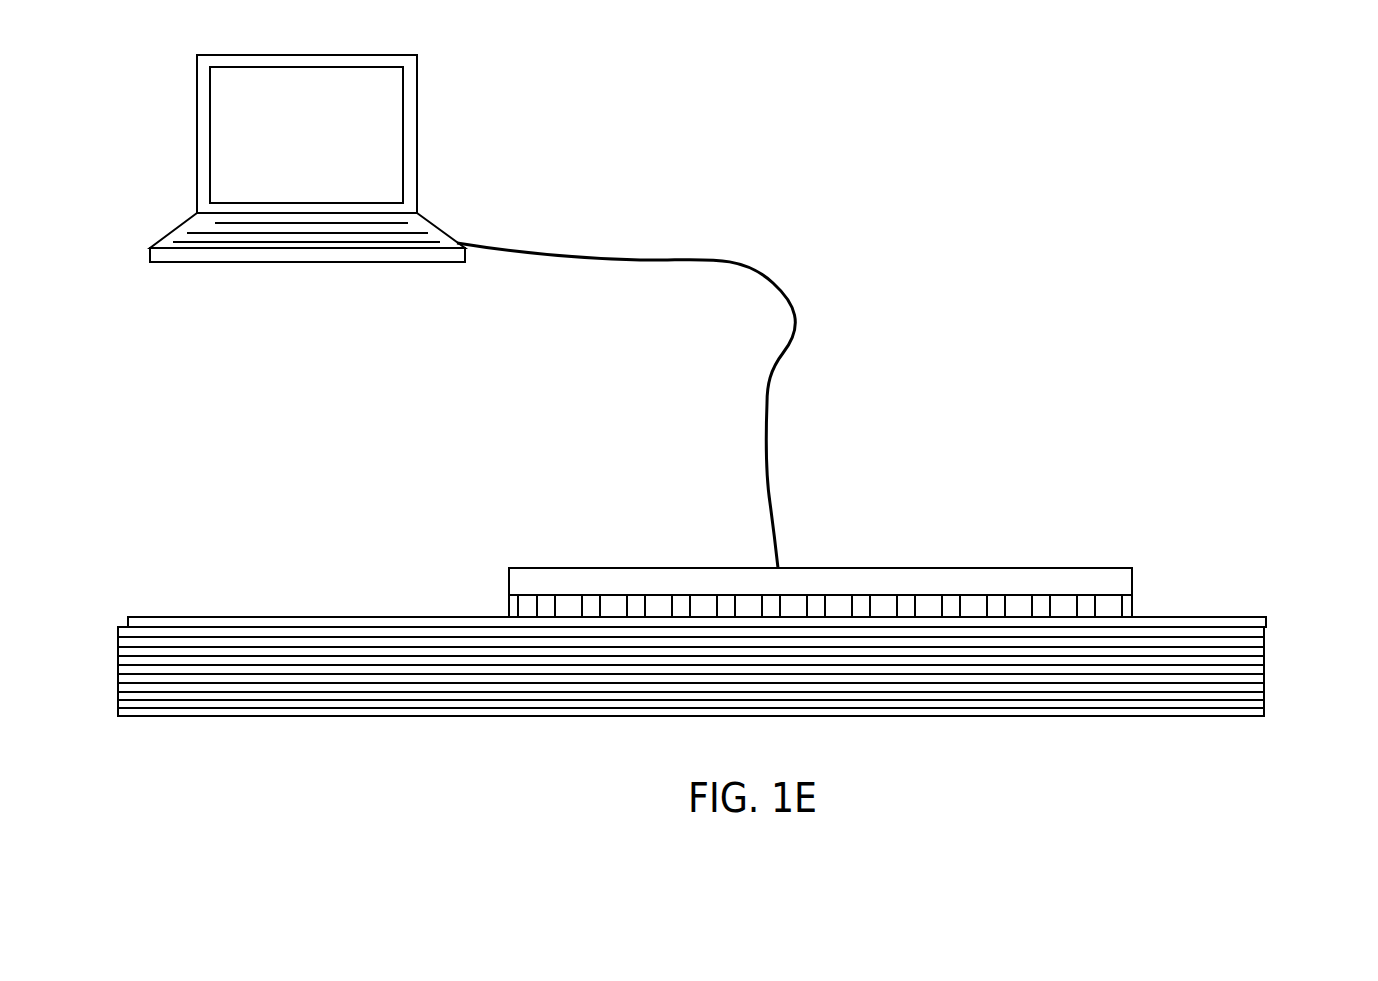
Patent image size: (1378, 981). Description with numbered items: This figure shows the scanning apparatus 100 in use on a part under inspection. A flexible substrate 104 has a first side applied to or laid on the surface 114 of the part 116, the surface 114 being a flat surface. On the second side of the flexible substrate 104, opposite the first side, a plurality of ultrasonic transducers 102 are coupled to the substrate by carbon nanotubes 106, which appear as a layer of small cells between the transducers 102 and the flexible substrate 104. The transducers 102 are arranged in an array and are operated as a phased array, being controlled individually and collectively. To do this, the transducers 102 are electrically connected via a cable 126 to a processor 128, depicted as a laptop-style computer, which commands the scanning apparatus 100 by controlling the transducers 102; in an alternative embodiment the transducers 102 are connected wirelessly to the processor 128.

The scanning apparatus 100 is at (967, 549).
The ultrasonic transducers 102 is at (1133, 577).
The flexible substrate 104 is at (1220, 628).
The carbon nanotubes 106 is at (1133, 607).
The surface 114 is at (1267, 631).
The part 116 is at (1265, 663).
The cable 126 is at (783, 297).
The processor 128 is at (418, 158).